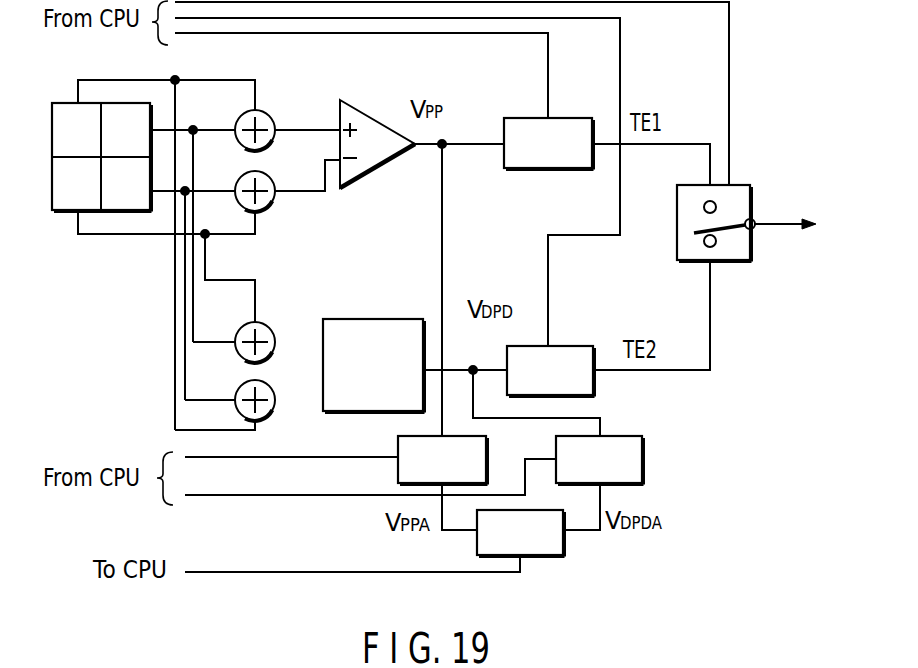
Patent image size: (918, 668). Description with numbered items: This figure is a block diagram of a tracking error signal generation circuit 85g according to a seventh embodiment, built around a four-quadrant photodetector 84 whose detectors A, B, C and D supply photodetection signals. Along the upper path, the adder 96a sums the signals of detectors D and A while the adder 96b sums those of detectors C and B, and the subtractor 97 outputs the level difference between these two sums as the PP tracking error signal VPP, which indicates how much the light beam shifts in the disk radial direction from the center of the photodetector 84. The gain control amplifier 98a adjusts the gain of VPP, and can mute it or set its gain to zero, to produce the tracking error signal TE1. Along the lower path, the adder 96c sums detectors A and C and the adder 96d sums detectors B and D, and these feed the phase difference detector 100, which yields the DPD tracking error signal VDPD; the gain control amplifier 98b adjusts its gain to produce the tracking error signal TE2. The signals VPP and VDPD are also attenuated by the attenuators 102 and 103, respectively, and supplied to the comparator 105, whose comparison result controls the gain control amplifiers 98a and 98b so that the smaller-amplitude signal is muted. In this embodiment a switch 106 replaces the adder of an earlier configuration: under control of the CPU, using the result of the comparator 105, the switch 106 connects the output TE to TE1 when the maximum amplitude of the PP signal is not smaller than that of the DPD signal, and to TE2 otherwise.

The photodetector 84 is at (62, 228).
The tracking error signal generation circuit 85g is at (502, 229).
The adder 96a is at (269, 117).
The adder 96b is at (270, 205).
The adder 96c is at (269, 328).
The adder 96d is at (269, 386).
The subtractor 97 is at (376, 168).
The gain control amplifier 98a is at (578, 118).
The gain control amplifier 98b is at (576, 346).
The phase difference detector 100 is at (382, 319).
The attenuator 102 is at (488, 457).
The attenuator 103 is at (627, 436).
The comparator 105 is at (566, 538).
The switch 106 is at (742, 185).